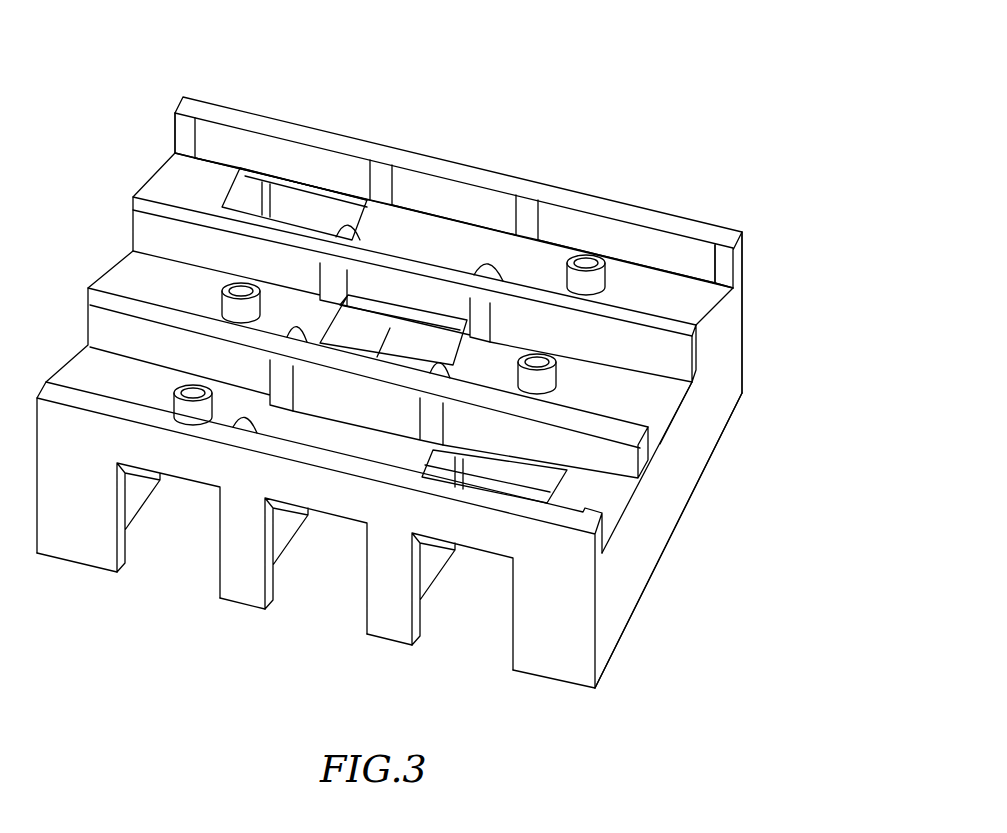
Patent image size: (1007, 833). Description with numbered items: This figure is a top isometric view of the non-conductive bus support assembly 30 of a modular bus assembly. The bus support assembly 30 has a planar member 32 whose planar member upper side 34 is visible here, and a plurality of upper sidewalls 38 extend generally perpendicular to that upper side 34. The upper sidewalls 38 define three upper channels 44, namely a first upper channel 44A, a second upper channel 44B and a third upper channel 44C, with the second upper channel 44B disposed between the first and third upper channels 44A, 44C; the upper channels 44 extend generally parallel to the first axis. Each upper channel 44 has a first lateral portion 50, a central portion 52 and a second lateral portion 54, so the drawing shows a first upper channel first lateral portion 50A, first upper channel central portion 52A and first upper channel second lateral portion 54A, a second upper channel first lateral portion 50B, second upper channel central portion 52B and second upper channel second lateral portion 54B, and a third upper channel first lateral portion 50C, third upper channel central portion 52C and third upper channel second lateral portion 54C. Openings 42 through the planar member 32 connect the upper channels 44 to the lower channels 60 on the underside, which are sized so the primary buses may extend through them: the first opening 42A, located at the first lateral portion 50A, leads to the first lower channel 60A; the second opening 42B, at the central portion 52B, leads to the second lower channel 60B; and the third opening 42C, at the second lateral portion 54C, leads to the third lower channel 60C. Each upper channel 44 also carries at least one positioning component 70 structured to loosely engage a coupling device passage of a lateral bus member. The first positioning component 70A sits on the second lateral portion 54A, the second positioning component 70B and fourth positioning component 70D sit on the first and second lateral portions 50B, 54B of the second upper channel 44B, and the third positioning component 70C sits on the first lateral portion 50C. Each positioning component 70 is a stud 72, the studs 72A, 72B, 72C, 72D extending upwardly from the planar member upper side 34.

The bus support assembly 30 is at (617, 202).
The planar member 32 is at (660, 286).
The planar member upper side 34 is at (440, 228).
The upper sidewall 38 is at (345, 133).
The opening 42 is at (313, 92).
The first opening 42A is at (290, 206).
The second opening 42B is at (427, 347).
The third opening 42C is at (522, 484).
The upper channel 44 is at (128, 115).
The first upper channel 44A is at (769, 325).
The second upper channel 44B is at (709, 433).
The third upper channel 44C is at (665, 526).
The first lateral portion 50 is at (199, 75).
The first upper channel first lateral portion 50A is at (230, 167).
The second upper channel first lateral portion 50B is at (133, 245).
The third upper channel first lateral portion 50C is at (85, 377).
The central portion 52 is at (461, 80).
The first upper channel central portion 52A is at (393, 222).
The second upper channel central portion 52B is at (360, 320).
The third upper channel central portion 52C is at (318, 420).
The second lateral portion 54 is at (686, 94).
The first upper channel second lateral portion 54A is at (615, 280).
The second upper channel second lateral portion 54B is at (633, 382).
The third upper channel second lateral portion 54C is at (512, 444).
The lower channel 60 is at (81, 639).
The first lower channel 60A is at (159, 582).
The second lower channel 60B is at (311, 612).
The third lower channel 60C is at (468, 641).
The positioning component 70 is at (580, 158).
The first positioning component 70A is at (572, 262).
The second positioning component 70B is at (538, 357).
The third positioning component 70C is at (180, 390).
The fourth positioning component 70D is at (244, 290).
The stud 72 is at (633, 72).
The first stud 72A is at (588, 258).
The second stud 72B is at (557, 386).
The third stud 72C is at (193, 388).
The fourth stud 72D is at (230, 290).